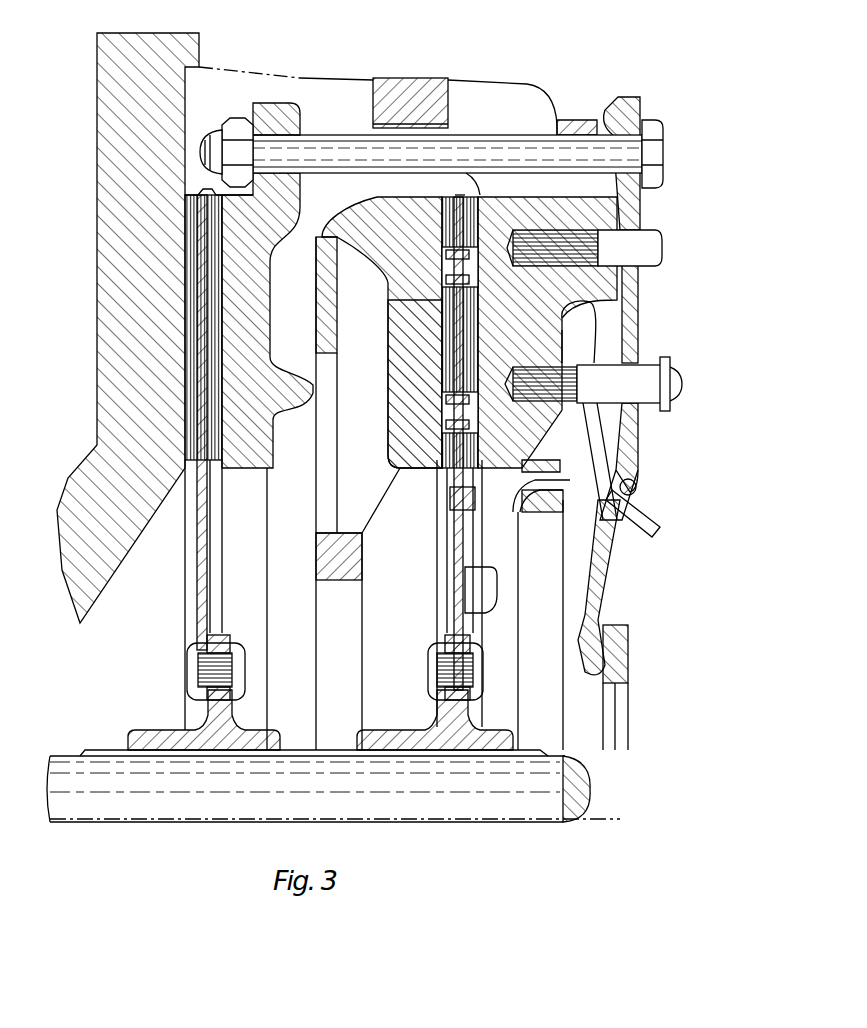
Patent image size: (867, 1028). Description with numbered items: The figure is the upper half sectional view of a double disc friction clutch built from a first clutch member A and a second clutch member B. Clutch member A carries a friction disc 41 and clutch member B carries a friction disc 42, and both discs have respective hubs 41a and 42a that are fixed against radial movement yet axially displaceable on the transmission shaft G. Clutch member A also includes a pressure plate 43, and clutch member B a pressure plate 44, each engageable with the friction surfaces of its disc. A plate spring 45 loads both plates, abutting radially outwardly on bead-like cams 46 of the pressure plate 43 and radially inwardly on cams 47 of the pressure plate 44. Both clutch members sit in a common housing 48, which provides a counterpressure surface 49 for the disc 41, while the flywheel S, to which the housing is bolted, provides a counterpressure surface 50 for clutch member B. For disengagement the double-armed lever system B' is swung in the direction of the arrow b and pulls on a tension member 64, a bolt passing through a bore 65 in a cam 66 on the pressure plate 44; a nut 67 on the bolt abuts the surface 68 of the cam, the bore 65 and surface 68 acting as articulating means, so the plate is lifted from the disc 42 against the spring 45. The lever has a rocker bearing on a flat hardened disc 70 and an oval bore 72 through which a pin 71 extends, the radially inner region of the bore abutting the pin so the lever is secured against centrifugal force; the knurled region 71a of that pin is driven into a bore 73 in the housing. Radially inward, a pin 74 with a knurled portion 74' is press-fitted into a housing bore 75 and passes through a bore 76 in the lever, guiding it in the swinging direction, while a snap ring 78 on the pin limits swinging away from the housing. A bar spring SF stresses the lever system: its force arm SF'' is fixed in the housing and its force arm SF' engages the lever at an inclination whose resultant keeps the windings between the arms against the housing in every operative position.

The flywheel S is at (108, 80).
The second clutch member B is at (160, 161).
The pressure plate 44 is at (235, 243).
The friction disc 42 is at (192, 294).
The counterpressure surface 50 is at (185, 394).
The hub 42a is at (186, 730).
The bead-like prominences or cams 47 is at (307, 402).
The plate spring 45 is at (325, 335).
The cams or bead-like prominences 46 is at (350, 262).
The pressure plate 43 is at (400, 424).
The bore 73 is at (530, 220).
The hardened disc 70 is at (612, 215).
The oval bore 72 is at (636, 279).
The bore 76 is at (640, 414).
The lever system B' is at (652, 480).
The counterpressure or reaction surface 49 is at (560, 331).
The bar spring SF is at (666, 233).
The force arm SF' is at (660, 490).
The force arm SF'' is at (636, 529).
The direction of swinging (arrow) b is at (672, 630).
The bore 75 is at (533, 404).
The friction disc 41 is at (480, 255).
The first clutch member A is at (462, 195).
The hub 41a is at (430, 728).
The bore 65 is at (300, 124).
The cam 66 is at (290, 110).
The housing 48 is at (415, 88).
The nut 67 is at (238, 122).
The surface 68 is at (237, 128).
The tension member (bolt) 64 is at (628, 150).
The knurled region 71a is at (558, 247).
The pin 71 is at (650, 249).
The splined portion of pin 74' is at (597, 356).
The pin 74 is at (649, 367).
The snap ring 78 is at (665, 384).
The transmission shaft G is at (508, 808).